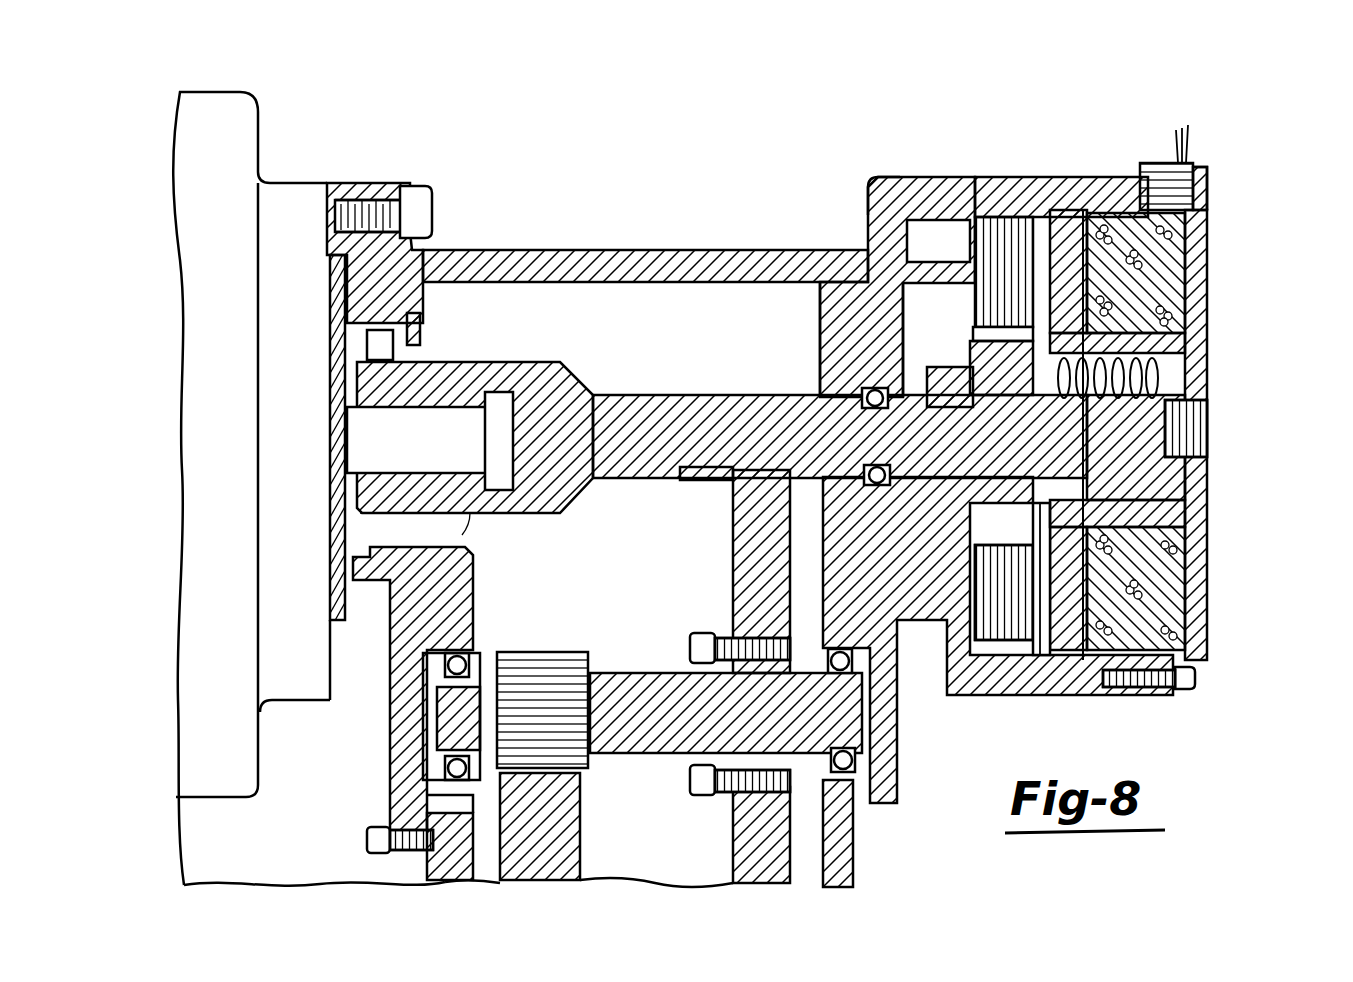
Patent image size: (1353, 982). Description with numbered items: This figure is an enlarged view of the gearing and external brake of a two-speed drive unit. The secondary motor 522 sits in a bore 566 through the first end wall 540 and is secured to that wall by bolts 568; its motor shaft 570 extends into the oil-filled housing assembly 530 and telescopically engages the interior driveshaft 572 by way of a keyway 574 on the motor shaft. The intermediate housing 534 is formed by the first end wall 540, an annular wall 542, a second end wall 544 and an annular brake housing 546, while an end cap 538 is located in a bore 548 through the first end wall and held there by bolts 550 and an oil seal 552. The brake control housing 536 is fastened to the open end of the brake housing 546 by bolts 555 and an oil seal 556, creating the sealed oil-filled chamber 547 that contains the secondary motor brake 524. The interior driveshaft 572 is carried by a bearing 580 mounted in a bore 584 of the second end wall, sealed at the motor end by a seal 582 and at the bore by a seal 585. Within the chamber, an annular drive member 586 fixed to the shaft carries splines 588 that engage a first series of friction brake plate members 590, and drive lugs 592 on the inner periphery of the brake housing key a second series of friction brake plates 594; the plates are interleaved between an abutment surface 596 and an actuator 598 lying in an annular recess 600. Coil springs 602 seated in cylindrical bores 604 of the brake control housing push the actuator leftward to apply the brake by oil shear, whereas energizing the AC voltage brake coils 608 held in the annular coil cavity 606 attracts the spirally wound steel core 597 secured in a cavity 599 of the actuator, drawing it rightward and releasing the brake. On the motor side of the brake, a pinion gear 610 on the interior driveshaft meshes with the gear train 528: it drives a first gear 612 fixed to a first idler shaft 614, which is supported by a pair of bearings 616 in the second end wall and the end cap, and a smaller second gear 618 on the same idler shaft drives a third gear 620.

The secondary motor 522 is at (237, 135).
The secondary motor brake 524 is at (1105, 125).
The gear train 528 is at (905, 750).
The housing assembly 530 is at (812, 262).
The intermediate housing 534 is at (520, 258).
The brake control housing 536 is at (1200, 290).
The end cap 538 is at (430, 810).
The first end wall 540 is at (445, 880).
The annular wall 542 is at (628, 262).
The second end wall 544 is at (870, 835).
The annular brake housing 546 is at (962, 195).
The sealed oil-filled chamber 547 is at (900, 345).
The bore 548 is at (467, 590).
The bolts 550 is at (372, 838).
The oil seal 552 is at (440, 807).
The bolts 555 is at (1195, 680).
The oil seal 556 is at (1107, 647).
The bore 566 is at (333, 258).
The bolts 568 is at (410, 210).
The motor shaft 570 is at (442, 463).
The interior driveshaft 572 is at (455, 380).
The keyway 574 is at (462, 480).
The bearing 580 is at (850, 360).
The seal 582 is at (408, 330).
The bore 584 is at (850, 480).
The seal 585 is at (835, 388).
The annular drive member 586 is at (1003, 483).
The splines 588 is at (1037, 543).
The friction brake plate members 590 is at (1030, 577).
The drive lugs 592 is at (940, 232).
The friction brake plates 594 is at (990, 645).
The abutment surface 596 is at (870, 205).
The spirally wound steel core 597 is at (1085, 340).
The actuator 598 is at (1060, 663).
The cavity 599 is at (1070, 260).
The annular recess 600 is at (1050, 207).
The coil springs 602 is at (1160, 365).
The cylindrical bores 604 is at (1175, 382).
The annular coil cavity 606 is at (1183, 216).
The AC voltage brake coils 608 is at (1160, 262).
The pinion gear 610 is at (720, 478).
The first gear 612 is at (750, 585).
The first idler shaft 614 is at (632, 745).
The bearings 616 is at (460, 655).
The second gear 618 is at (580, 652).
The third gear 620 is at (560, 830).